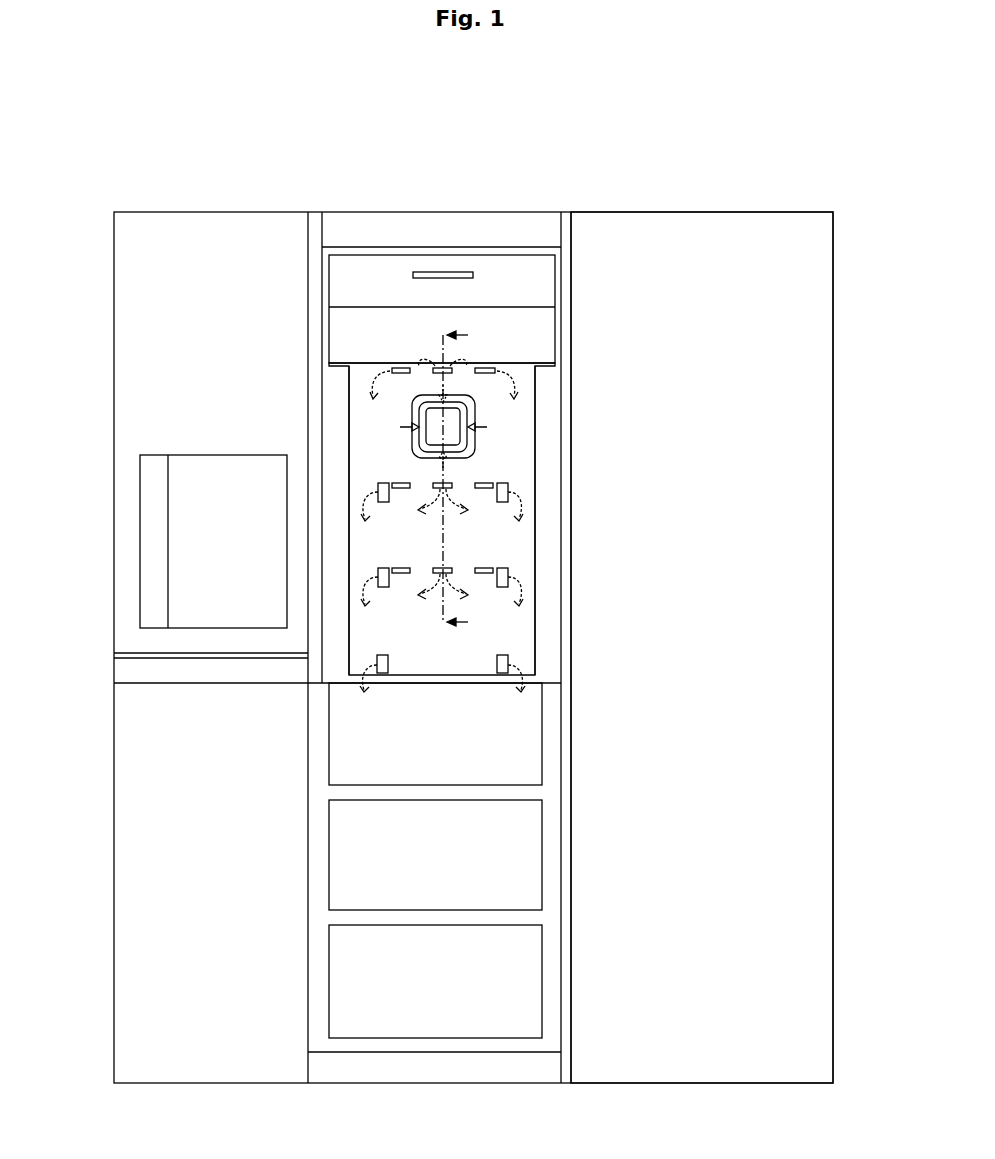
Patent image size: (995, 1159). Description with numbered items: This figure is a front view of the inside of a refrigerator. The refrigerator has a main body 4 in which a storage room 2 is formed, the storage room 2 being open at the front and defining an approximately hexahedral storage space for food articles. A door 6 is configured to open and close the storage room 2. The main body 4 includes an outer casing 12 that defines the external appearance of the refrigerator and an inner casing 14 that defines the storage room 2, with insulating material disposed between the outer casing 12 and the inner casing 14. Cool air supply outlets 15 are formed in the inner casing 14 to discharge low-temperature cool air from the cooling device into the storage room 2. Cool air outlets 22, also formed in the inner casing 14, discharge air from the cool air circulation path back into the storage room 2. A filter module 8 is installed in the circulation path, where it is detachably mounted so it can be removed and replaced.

The storage room 2 is at (363, 382).
The main body 4 is at (587, 159).
The door 6 is at (708, 242).
The filter module 8 is at (462, 393).
The outer casing 12 is at (455, 212).
The inner casing 14 is at (358, 417).
The cool air supply outlets 15 is at (392, 368).
The cool air outlets 22 is at (424, 360).